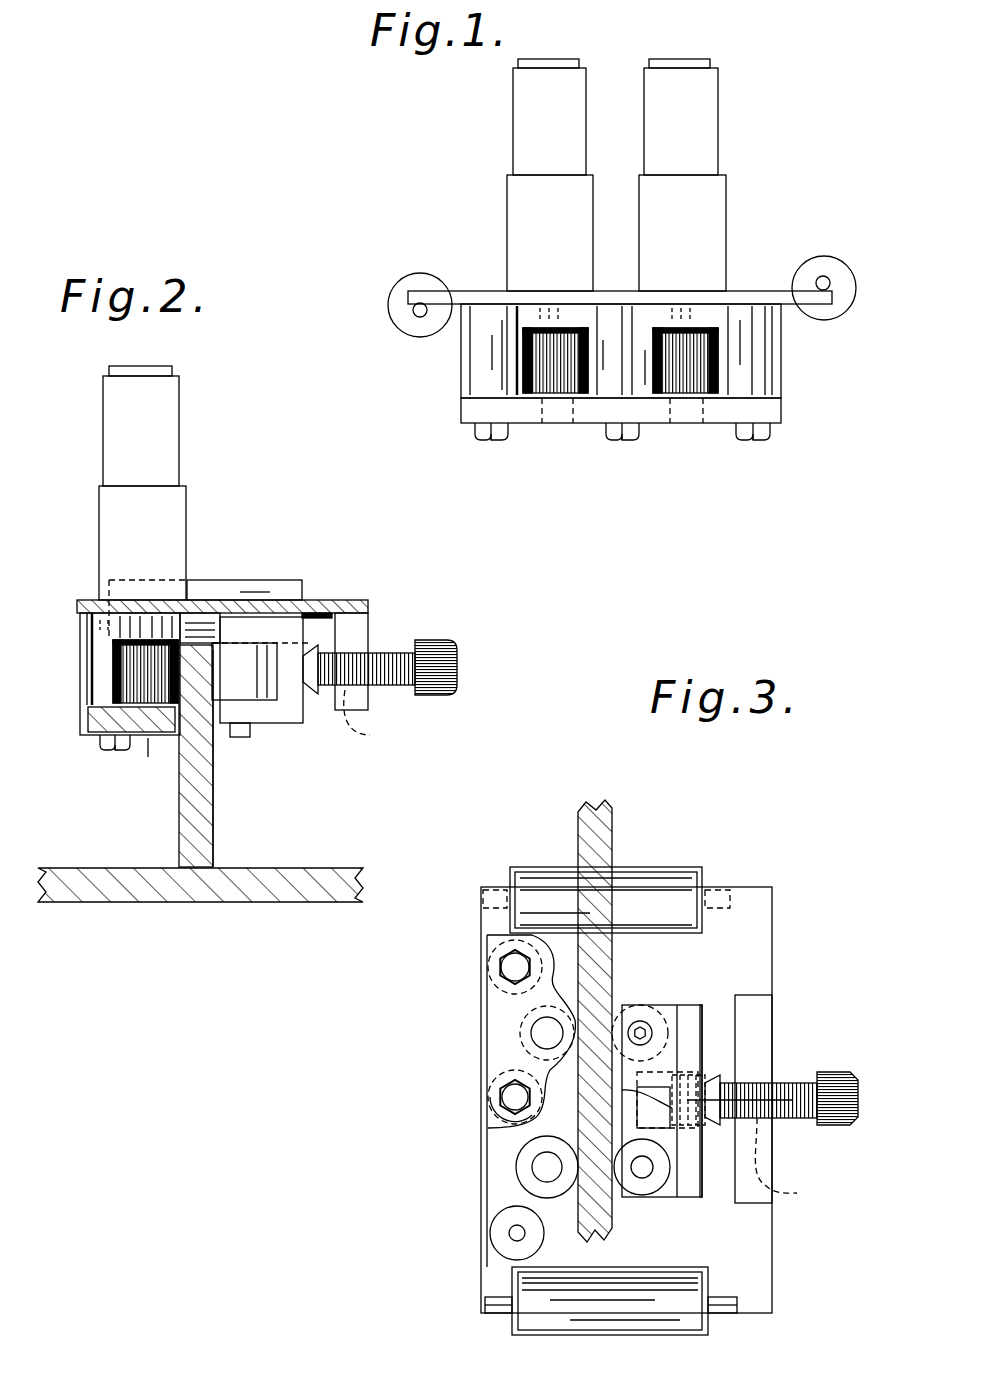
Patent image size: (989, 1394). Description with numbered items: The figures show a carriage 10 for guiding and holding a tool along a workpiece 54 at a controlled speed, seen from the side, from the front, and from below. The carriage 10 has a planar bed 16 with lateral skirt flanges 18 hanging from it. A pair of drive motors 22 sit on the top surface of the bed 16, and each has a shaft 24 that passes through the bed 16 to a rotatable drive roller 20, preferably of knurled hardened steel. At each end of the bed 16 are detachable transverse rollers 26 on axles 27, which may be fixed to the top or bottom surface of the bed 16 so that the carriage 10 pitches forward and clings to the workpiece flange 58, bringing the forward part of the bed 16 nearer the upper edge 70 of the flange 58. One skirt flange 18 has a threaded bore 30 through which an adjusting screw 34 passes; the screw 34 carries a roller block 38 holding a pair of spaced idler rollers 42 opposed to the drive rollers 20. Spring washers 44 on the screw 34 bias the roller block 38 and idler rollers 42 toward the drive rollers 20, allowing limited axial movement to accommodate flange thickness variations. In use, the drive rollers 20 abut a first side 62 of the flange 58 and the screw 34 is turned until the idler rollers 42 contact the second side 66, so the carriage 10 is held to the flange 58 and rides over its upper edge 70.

In FIG. 1, the carriage 10 is at (470, 200).
In FIG. 2, the carriage 10 is at (385, 590).
In FIG. 3, the carriage 10 is at (462, 1097).
In FIG. 1, the planar bed 16 is at (487, 294).
In FIG. 2, the planar bed 16 is at (348, 600).
In FIG. 3, the planar bed 16 is at (757, 907).
In FIG. 2, the lateral skirt flanges 18 is at (375, 700).
In FIG. 3, the lateral skirt flanges 18 is at (757, 1012).
In FIG. 1, the drive roller 20 is at (556, 394).
In FIG. 2, the drive roller 20 is at (145, 671).
In FIG. 3, the drive roller 20 is at (540, 1032).
In FIG. 1, the drive motor 22 is at (530, 131).
In FIG. 2, the drive motor 22 is at (155, 437).
In FIG. 1, the shaft 24 is at (557, 314).
In FIG. 2, the shaft 24 is at (160, 622).
In FIG. 1, the transverse roller 26 is at (404, 275).
In FIG. 2, the transverse roller 26 is at (248, 590).
In FIG. 3, the transverse roller 26 is at (655, 880).
In FIG. 1, the axle 27 is at (419, 317).
In FIG. 2, the axle 27 is at (315, 610).
In FIG. 3, the axle 27 is at (483, 890).
In FIG. 2, the threaded bore 30 is at (372, 717).
In FIG. 3, the threaded bore 30 is at (736, 1138).
In FIG. 2, the adjusting screw 34 is at (392, 652).
In FIG. 3, the adjusting screw 34 is at (792, 1118).
In FIG. 2, the roller block 38 is at (285, 712).
In FIG. 3, the roller block 38 is at (685, 1005).
In FIG. 2, the idler rollers 42 is at (250, 690).
In FIG. 3, the idler rollers 42 is at (668, 1024).
In FIG. 2, the spring washers 44 is at (312, 700).
In FIG. 3, the spring washers 44 is at (720, 1125).
In FIG. 2, the workpiece 54 is at (80, 868).
In FIG. 2, the workpiece flange 58 is at (192, 822).
In FIG. 3, the workpiece flange 58 is at (600, 825).
In FIG. 2, the first side 62 is at (178, 765).
In FIG. 2, the second side 66 is at (214, 795).
In FIG. 2, the upper edge 70 is at (199, 640).